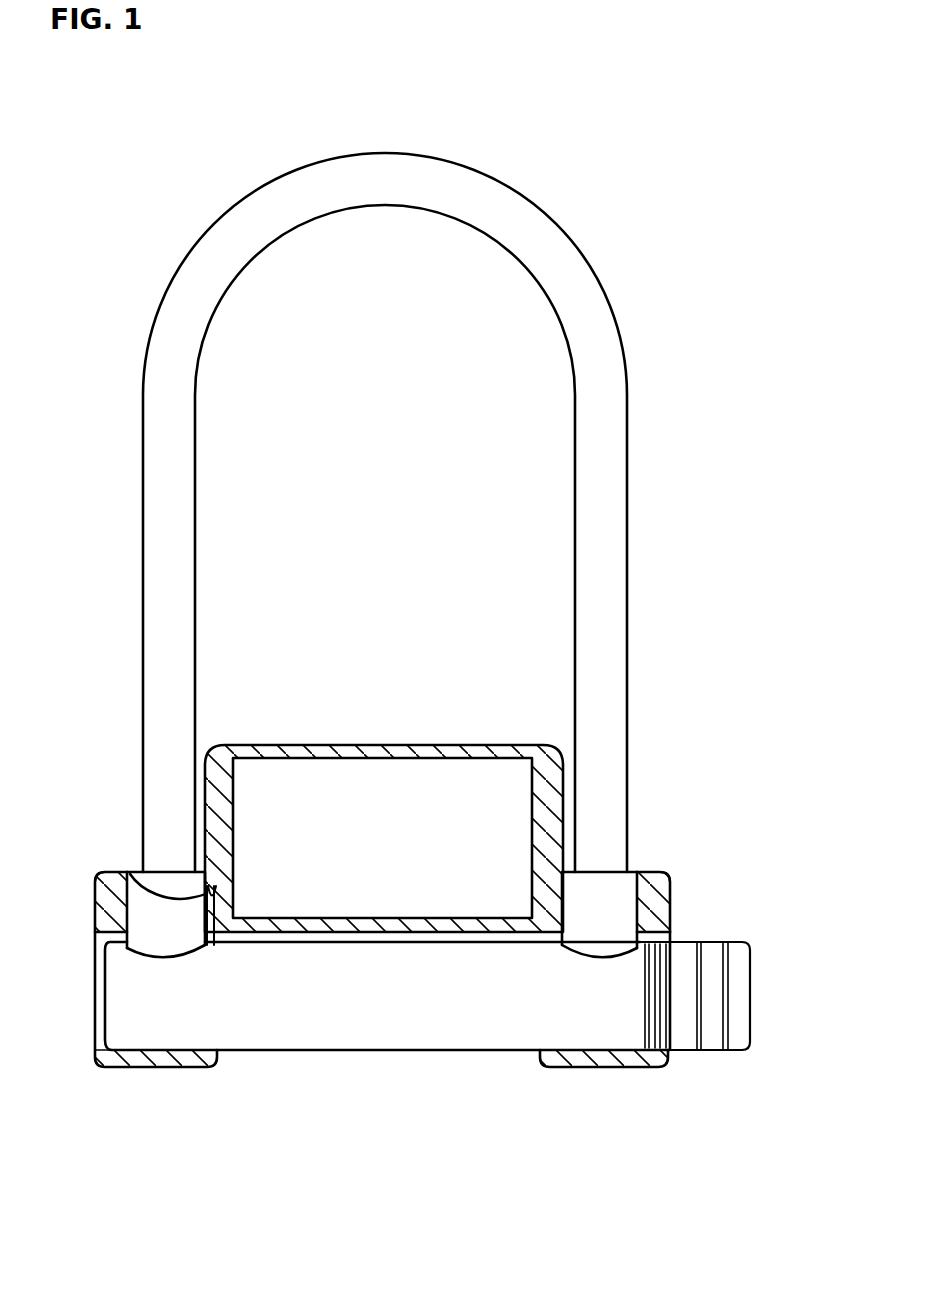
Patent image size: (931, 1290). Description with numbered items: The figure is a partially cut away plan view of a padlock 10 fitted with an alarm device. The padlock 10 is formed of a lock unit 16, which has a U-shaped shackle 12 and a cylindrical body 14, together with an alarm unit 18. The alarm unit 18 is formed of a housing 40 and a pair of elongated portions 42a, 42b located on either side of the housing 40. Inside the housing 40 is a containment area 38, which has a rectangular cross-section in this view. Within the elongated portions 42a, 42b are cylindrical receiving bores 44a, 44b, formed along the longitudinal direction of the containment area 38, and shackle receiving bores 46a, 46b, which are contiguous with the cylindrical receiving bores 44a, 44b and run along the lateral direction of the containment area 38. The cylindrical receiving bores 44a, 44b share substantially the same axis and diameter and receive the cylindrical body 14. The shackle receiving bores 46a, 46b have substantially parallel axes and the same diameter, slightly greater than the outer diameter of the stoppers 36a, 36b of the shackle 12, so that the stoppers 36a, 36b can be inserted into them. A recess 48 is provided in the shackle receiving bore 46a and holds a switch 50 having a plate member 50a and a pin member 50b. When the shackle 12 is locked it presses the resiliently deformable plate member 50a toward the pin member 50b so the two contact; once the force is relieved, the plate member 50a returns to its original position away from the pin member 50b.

The padlock 10 is at (630, 156).
The U-shaped shackle 12 is at (634, 406).
The cylindrical body 14 is at (422, 1014).
The lock unit 16 is at (686, 709).
The alarm unit 18 is at (384, 792).
The stopper 36a is at (96, 906).
The stopper 36b is at (642, 916).
The containment area 38 is at (346, 806).
The housing 40 is at (385, 742).
The elongated portion 42a is at (97, 895).
The elongated portion 42b is at (648, 876).
The cylindrical receiving bore 44a is at (157, 1050).
The cylindrical receiving bore 44b is at (612, 1050).
The shackle receiving bore 46a is at (136, 875).
The shackle receiving bore 46b is at (637, 883).
The recess 48 is at (141, 874).
The switch 50 is at (265, 1045).
The plate member 50a is at (210, 945).
The pin member 50b is at (216, 945).